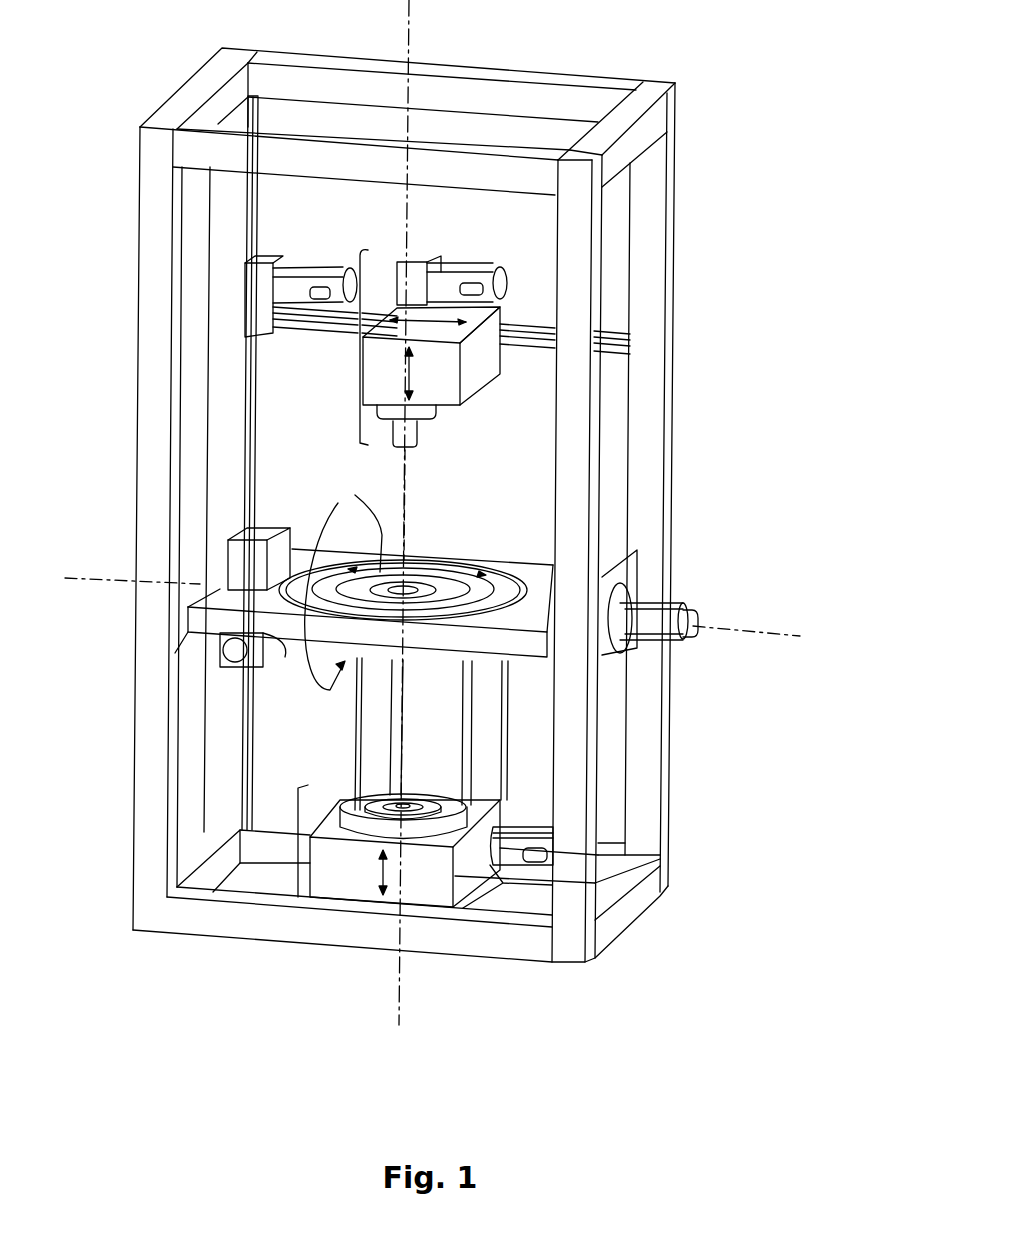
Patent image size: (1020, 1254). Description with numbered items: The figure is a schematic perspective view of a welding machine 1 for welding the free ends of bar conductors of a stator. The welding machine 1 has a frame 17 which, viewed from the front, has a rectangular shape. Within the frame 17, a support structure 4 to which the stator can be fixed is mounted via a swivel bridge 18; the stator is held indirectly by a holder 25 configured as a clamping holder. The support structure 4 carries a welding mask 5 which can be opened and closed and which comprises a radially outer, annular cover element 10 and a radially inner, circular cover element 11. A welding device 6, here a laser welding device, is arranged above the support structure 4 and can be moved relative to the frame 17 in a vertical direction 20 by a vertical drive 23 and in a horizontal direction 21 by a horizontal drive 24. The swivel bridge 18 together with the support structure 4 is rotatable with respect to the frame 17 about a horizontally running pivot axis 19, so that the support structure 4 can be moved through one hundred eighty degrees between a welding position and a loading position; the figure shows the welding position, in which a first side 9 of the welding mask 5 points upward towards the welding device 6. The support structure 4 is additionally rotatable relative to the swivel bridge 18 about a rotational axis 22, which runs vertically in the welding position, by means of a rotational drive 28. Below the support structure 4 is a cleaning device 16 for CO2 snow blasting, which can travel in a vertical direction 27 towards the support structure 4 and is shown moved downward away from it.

The welding machine 1 is at (241, 982).
The support structure 4 is at (353, 535).
The welding mask 5 is at (447, 503).
The welding device 6 is at (362, 343).
The first side 9 is at (407, 593).
The annular cover element 10 is at (490, 575).
The circular cover element 11 is at (448, 595).
The cleaning device 16 is at (300, 833).
The frame 17 is at (652, 240).
The swivel bridge 18 is at (303, 557).
The pivot axis 19 is at (747, 630).
The vertical direction 20 is at (410, 372).
The horizontal direction 21 is at (430, 317).
The rotational axis 22 is at (436, 22).
The vertical drive 23 is at (292, 287).
The horizontal drive 24 is at (417, 277).
The holder 25 is at (353, 648).
The vertical direction 27 is at (390, 868).
The rotational drive 28 is at (240, 553).